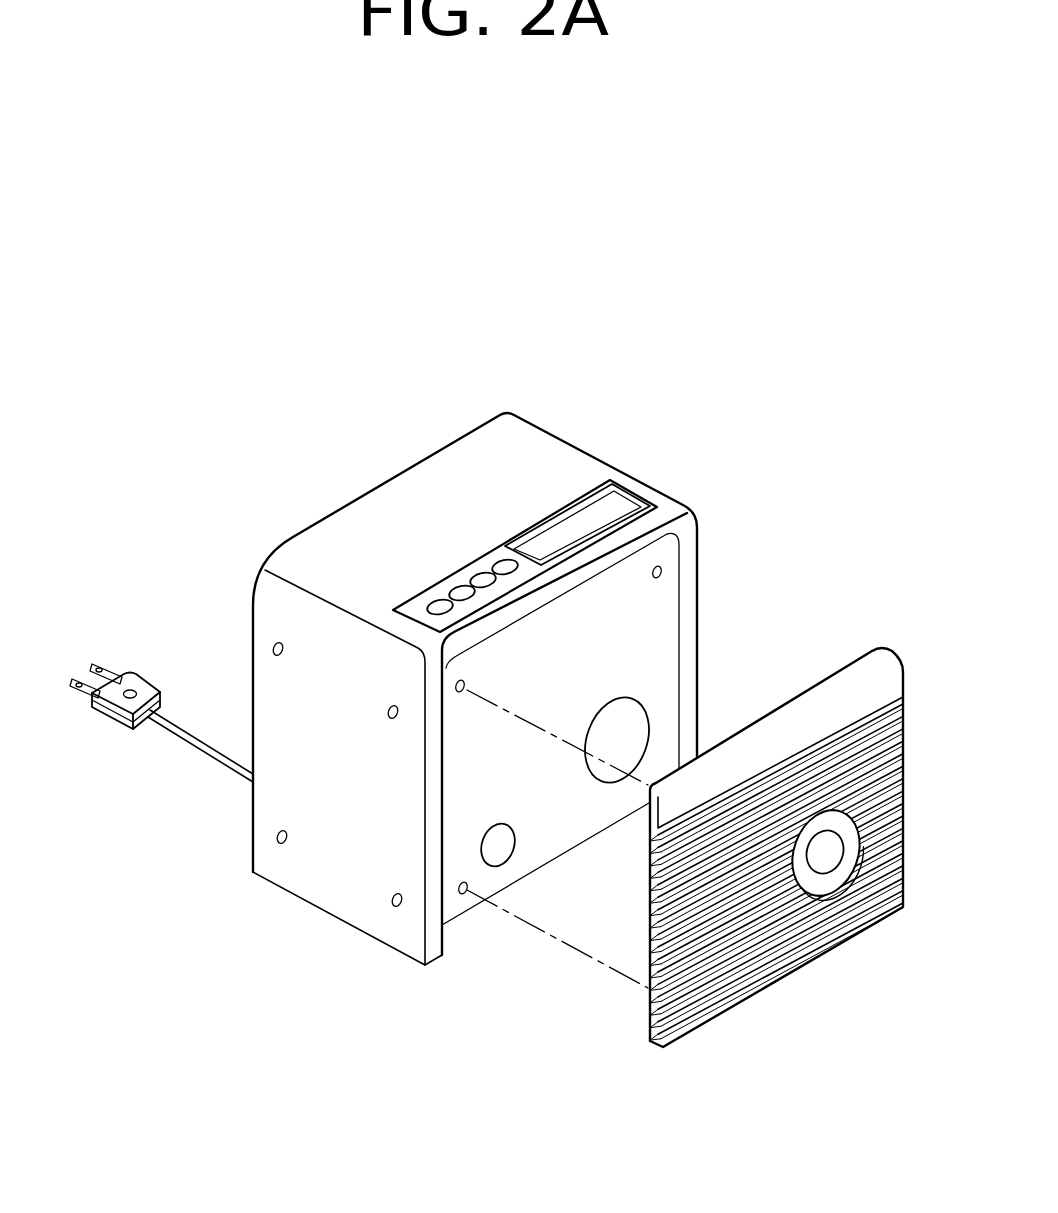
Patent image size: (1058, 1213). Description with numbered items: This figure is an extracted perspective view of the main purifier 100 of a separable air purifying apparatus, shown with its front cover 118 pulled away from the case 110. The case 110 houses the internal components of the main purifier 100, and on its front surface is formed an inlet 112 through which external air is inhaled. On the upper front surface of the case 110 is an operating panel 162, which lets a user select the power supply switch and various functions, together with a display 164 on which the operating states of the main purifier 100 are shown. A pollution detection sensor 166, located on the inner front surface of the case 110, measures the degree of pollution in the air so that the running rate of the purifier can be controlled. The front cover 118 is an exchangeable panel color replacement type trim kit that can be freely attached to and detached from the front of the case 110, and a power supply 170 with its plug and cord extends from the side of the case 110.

The main purifier 100 is at (532, 682).
The case 110 is at (595, 467).
The inlet 112 is at (633, 708).
The front cover 118 is at (724, 995).
The operating panel 162 is at (440, 608).
The display 164 is at (638, 502).
The pollution detection sensor 166 is at (498, 848).
The power supply 170 is at (132, 675).